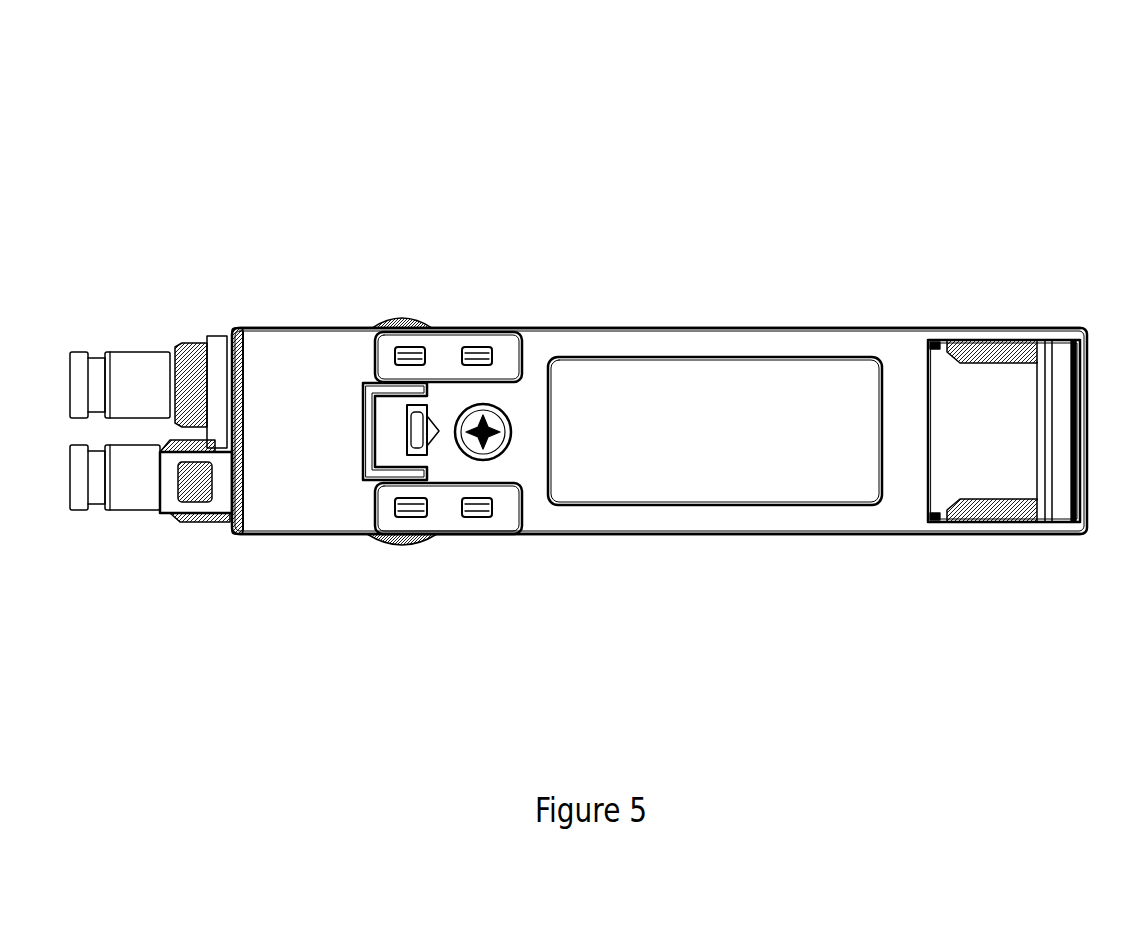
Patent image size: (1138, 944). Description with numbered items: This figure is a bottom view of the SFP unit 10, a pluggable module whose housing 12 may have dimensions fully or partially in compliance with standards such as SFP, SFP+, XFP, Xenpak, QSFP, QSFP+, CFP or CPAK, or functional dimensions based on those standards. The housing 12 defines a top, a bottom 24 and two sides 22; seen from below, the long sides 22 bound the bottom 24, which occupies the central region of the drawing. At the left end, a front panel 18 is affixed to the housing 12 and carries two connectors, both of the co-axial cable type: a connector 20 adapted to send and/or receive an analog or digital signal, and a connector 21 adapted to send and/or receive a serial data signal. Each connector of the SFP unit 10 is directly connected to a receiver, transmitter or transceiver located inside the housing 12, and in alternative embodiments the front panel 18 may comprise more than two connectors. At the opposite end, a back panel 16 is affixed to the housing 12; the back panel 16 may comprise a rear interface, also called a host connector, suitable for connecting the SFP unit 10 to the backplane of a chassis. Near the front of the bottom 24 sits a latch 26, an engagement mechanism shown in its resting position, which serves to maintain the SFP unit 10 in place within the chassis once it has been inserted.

The SFP unit 10 is at (633, 110).
The housing 12 is at (905, 394).
The back panel 16 is at (1087, 380).
The front panel 18 is at (235, 328).
The connector 20 is at (156, 395).
The connector 21 is at (154, 488).
The sides 22 is at (627, 330).
The bottom 24 is at (723, 453).
The latch 26 is at (430, 433).